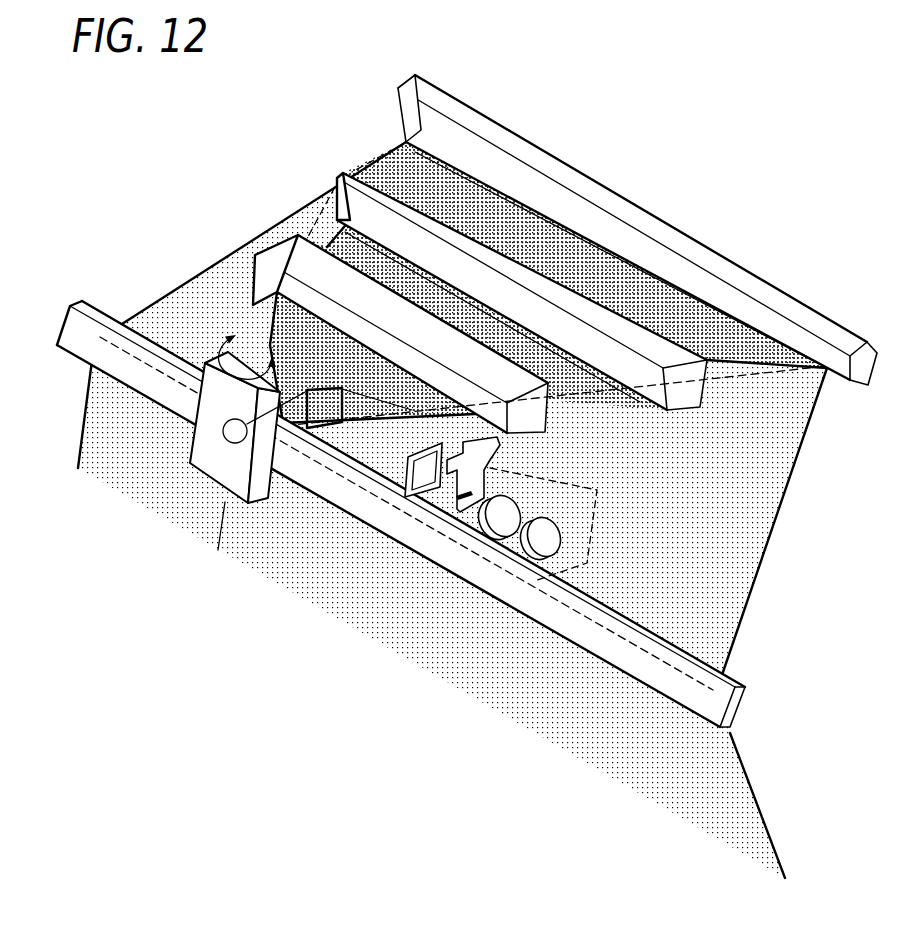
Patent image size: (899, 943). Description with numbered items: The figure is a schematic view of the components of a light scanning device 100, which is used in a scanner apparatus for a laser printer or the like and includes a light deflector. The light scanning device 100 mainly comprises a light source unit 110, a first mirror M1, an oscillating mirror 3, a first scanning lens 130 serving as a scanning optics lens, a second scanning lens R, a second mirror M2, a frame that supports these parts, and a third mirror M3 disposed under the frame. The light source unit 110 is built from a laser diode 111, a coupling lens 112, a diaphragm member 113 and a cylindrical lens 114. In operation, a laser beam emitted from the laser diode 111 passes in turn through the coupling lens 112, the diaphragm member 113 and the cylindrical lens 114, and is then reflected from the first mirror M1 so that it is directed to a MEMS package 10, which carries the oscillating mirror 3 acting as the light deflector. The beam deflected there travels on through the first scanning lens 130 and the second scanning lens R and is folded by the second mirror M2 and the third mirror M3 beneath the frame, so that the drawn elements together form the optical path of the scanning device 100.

The light scanning device 100 is at (652, 176).
The second mirror M2 is at (786, 293).
The second scanning lens R is at (688, 388).
The first scanning lens 130 is at (600, 457).
The third mirror M3 is at (742, 704).
The oscillating mirror 3 is at (187, 483).
The MEMS package 10 is at (241, 488).
The first mirror M1 is at (340, 434).
The cylindrical lens 114 is at (406, 488).
The diaphragm member 113 is at (458, 512).
The light source unit 110 is at (472, 582).
The coupling lens 112 is at (498, 537).
The laser diode 111 is at (540, 560).